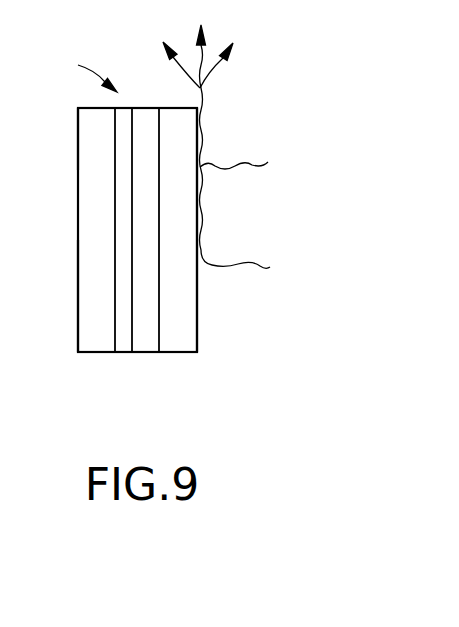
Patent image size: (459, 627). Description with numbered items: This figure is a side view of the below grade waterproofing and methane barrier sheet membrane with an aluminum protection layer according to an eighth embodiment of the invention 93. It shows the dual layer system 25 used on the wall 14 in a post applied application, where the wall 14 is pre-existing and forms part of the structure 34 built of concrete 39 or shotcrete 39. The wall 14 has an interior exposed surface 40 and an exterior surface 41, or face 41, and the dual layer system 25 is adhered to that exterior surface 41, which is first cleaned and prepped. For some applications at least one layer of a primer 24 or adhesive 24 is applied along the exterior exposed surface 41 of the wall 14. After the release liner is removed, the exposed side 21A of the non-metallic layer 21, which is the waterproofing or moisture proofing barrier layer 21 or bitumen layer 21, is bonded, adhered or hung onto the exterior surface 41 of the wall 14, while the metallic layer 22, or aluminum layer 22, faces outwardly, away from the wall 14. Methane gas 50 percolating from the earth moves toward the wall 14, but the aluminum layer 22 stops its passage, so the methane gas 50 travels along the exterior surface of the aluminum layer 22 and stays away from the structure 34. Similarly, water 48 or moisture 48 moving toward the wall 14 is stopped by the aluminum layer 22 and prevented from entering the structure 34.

The eighth embodiment of the invention 93 is at (73, 57).
The structure 34 is at (78, 130).
The dual layer system 25 is at (197, 98).
The methane gas 50 is at (214, 72).
The water 48 is at (240, 167).
The wall 14 is at (78, 234).
The interior exposed surface 40 is at (78, 276).
The exterior surface 41 is at (115, 318).
The concrete 39 is at (97, 344).
The primer 24 is at (127, 348).
The non-metallic layer 21 is at (143, 346).
The metallic layer 22 is at (177, 346).
The exposed side 21A is at (132, 328).